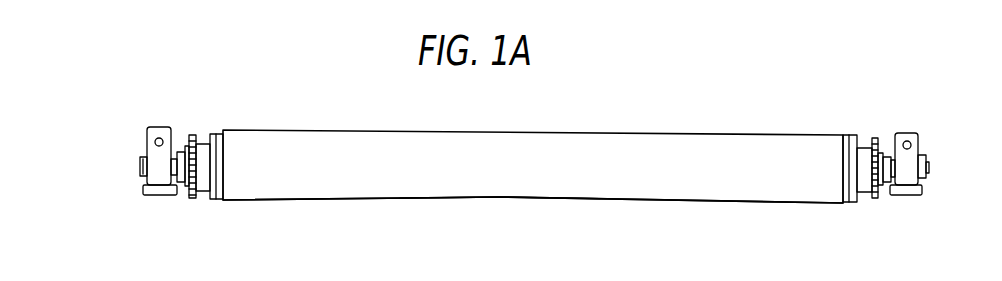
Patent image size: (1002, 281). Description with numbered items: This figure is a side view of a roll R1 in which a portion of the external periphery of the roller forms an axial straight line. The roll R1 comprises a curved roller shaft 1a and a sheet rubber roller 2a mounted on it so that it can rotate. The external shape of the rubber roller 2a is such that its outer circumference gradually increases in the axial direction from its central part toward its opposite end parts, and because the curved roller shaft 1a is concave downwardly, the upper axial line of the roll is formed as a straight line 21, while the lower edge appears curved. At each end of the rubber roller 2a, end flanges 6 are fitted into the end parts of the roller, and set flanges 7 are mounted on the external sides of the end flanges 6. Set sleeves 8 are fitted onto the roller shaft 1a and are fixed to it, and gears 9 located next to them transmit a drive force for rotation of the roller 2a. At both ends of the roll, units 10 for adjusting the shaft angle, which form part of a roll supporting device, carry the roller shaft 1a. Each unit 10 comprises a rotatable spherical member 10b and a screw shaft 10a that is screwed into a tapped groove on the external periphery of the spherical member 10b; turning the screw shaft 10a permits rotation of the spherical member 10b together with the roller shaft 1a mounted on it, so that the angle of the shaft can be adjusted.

The straight line 21 is at (712, 133).
The sheet rubber roller 2a is at (727, 198).
The roll R1 is at (500, 201).
The end flanges 6 is at (221, 199).
The set flanges 7 is at (203, 191).
The set sleeves 8 is at (185, 182).
The gears 9 is at (194, 135).
The units for adjusting the shaft angle 10 is at (160, 186).
The screw shafts 10a is at (154, 141).
The rotatable spherical members 10b is at (145, 180).
The curved roller shaft 1a is at (930, 165).